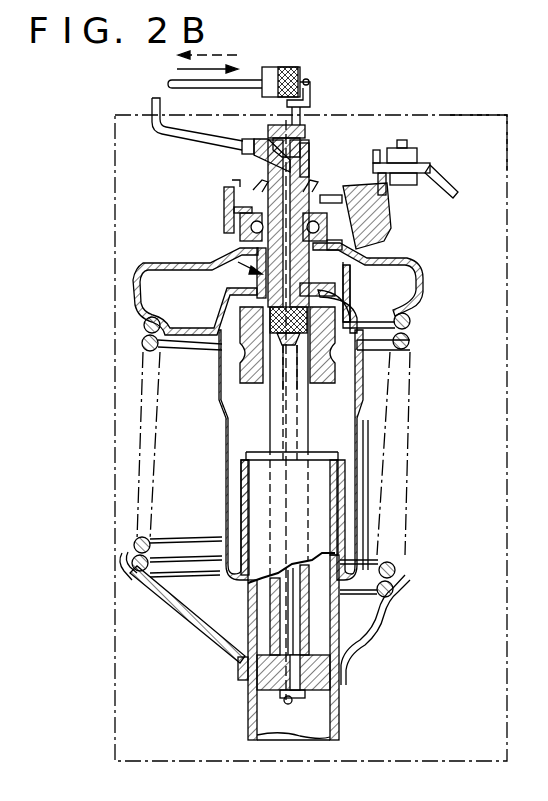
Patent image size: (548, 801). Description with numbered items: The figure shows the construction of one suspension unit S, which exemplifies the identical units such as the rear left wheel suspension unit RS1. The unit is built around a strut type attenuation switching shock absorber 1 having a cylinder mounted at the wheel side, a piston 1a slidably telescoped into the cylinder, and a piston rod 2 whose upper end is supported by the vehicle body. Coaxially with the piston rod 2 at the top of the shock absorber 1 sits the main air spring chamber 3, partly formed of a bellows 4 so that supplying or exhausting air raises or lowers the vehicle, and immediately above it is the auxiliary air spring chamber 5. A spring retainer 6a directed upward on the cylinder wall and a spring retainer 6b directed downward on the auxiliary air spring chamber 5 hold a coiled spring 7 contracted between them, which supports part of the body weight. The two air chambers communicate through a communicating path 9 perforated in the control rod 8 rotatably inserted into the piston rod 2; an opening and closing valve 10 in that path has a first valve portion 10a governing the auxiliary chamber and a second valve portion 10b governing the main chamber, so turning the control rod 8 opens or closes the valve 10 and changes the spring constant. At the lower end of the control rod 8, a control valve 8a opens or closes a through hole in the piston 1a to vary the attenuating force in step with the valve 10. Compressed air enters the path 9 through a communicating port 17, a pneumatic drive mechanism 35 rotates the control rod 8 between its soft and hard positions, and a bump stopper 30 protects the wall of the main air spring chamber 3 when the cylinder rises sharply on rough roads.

The strut type attenuation switching shock absorber 1 is at (250, 702).
The piston 1a is at (252, 720).
The piston rod 2 is at (308, 414).
The main air spring chamber 3 is at (221, 418).
The bellows 4 is at (222, 510).
The auxiliary air spring chamber 5 is at (146, 264).
The spring retainer 6a is at (392, 605).
The spring retainer 6b is at (412, 314).
The coiled spring 7 is at (396, 566).
The control rod 8 is at (285, 368).
The control valve 8a is at (332, 708).
The communicating path 9 is at (338, 258).
The opening and closing valve 10 is at (238, 262).
The first valve portion 10a is at (333, 280).
The second valve portion 10b is at (360, 362).
The communicating port 17 is at (242, 151).
The bump stopper 30 is at (247, 383).
The pneumatic drive mechanism 35 is at (280, 68).
The suspension unit S is at (400, 112).
The rear left wheel suspension unit RS1 is at (465, 114).